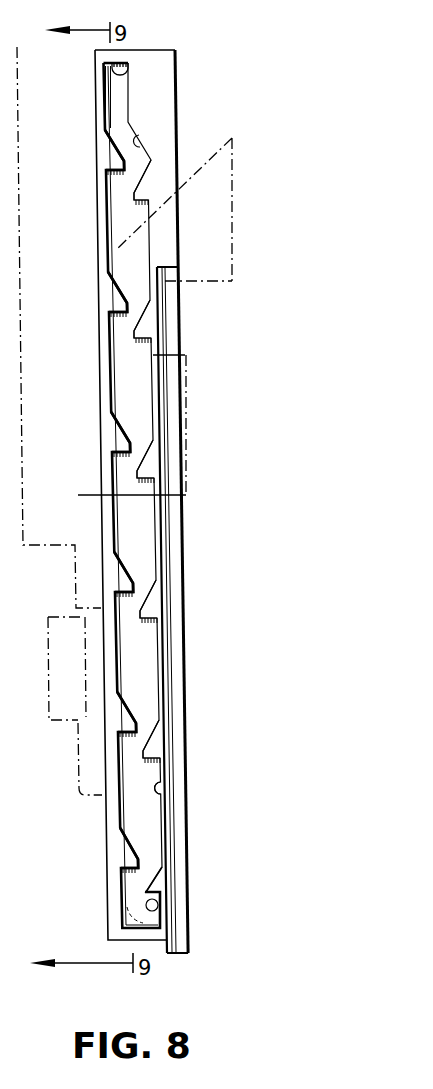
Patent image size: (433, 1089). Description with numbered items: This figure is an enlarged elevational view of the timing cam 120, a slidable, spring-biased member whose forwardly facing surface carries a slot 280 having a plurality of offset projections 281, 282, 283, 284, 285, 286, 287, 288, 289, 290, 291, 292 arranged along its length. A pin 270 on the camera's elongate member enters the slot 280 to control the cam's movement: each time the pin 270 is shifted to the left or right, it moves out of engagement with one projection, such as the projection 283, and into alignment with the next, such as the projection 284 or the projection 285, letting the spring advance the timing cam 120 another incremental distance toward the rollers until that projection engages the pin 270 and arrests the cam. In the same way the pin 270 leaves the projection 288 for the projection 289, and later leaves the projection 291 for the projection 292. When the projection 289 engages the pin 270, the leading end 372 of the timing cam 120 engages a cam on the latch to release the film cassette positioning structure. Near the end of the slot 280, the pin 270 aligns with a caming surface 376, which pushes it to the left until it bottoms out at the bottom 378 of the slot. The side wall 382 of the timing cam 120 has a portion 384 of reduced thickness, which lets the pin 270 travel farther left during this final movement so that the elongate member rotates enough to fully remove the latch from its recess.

The timing cam 120 is at (108, 924).
The pin 270 is at (157, 909).
The slot 280 is at (165, 792).
The projection 281 is at (150, 884).
The projection 282 is at (119, 856).
The projection 283 is at (150, 750).
The projection 284 is at (112, 722).
The projection 285 is at (148, 610).
The projection 286 is at (110, 578).
The projection 287 is at (145, 468).
The projection 288 is at (110, 437).
The projection 289 is at (141, 330).
The projection 290 is at (108, 296).
The projection 291 is at (142, 188).
The projection 292 is at (105, 153).
The leading end 372 is at (168, 955).
The caming surface 376 is at (143, 143).
The bottom of the slot 378 is at (126, 70).
The side wall 382 is at (105, 221).
The portion of reduced thickness 384 is at (101, 89).